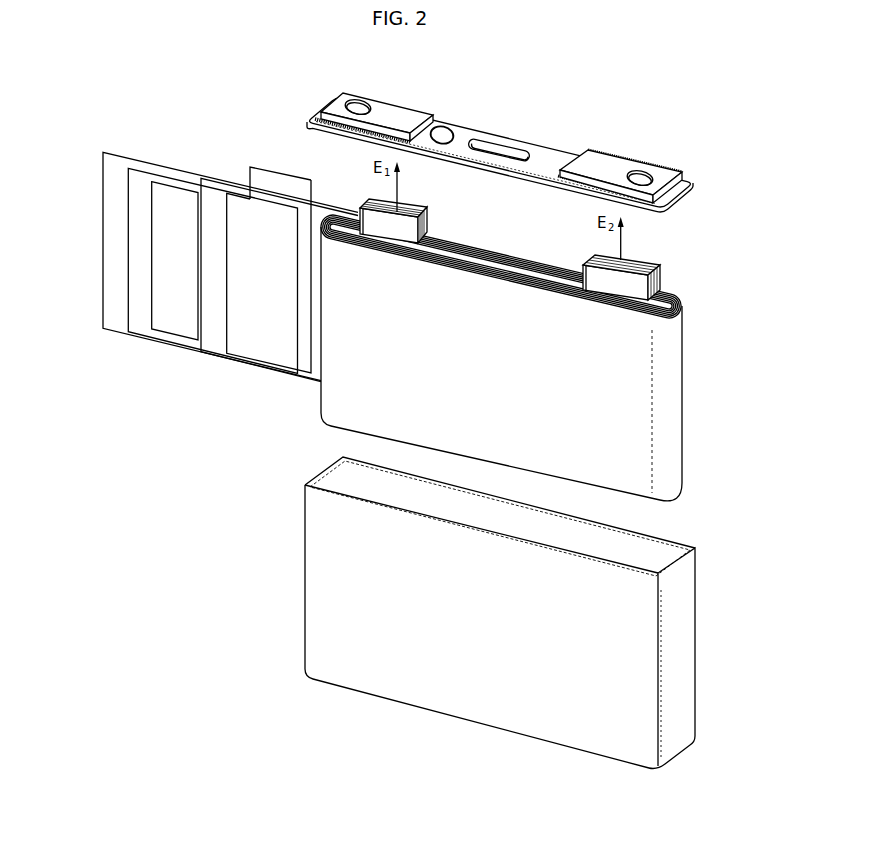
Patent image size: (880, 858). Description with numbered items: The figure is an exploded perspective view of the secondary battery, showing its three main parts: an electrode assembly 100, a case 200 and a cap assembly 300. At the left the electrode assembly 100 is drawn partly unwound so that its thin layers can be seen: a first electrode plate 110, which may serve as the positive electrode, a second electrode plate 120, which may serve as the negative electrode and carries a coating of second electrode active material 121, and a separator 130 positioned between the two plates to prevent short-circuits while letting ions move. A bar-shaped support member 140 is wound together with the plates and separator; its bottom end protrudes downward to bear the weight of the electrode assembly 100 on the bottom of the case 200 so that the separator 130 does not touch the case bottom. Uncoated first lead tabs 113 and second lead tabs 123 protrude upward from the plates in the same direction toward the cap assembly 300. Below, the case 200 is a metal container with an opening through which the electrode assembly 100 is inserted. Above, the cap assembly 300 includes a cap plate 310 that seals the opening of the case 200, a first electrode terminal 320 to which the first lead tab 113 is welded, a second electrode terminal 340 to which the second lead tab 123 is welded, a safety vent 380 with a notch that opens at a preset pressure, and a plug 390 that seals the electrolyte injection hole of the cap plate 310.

The electrode assembly 100 is at (697, 385).
The first electrode plate 110 is at (242, 210).
The first lead tab 113 is at (274, 161).
The second electrode plate 120 is at (138, 275).
The second electrode active material 121 is at (177, 321).
The second lead tab 123 is at (635, 268).
The separator 130 is at (115, 214).
The support member 140 is at (363, 213).
The case 200 is at (708, 644).
The cap assembly 300 is at (521, 135).
The cap plate 310 is at (557, 148).
The first electrode terminal 320 is at (390, 110).
The second electrode terminal 340 is at (613, 165).
The safety vent 380 is at (502, 147).
The plug 390 is at (443, 128).